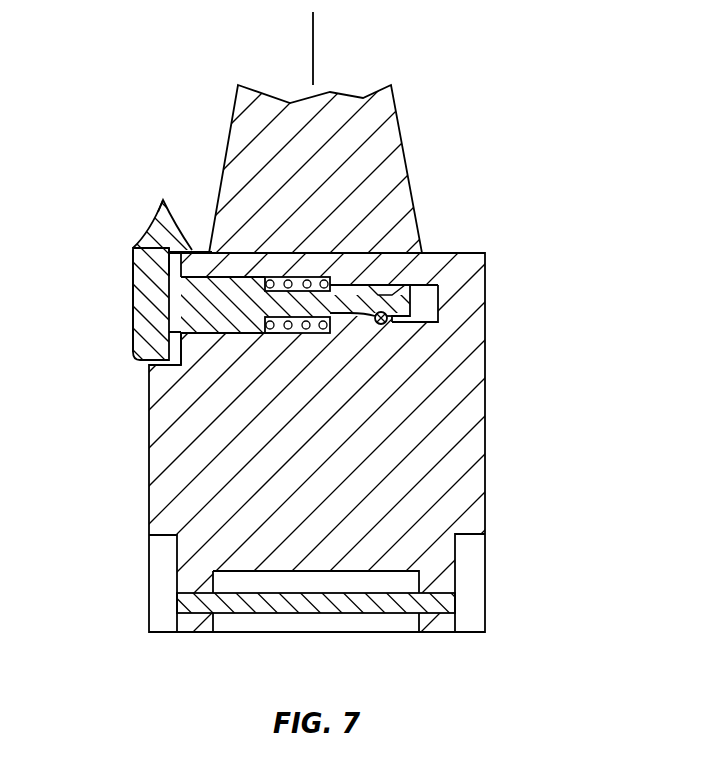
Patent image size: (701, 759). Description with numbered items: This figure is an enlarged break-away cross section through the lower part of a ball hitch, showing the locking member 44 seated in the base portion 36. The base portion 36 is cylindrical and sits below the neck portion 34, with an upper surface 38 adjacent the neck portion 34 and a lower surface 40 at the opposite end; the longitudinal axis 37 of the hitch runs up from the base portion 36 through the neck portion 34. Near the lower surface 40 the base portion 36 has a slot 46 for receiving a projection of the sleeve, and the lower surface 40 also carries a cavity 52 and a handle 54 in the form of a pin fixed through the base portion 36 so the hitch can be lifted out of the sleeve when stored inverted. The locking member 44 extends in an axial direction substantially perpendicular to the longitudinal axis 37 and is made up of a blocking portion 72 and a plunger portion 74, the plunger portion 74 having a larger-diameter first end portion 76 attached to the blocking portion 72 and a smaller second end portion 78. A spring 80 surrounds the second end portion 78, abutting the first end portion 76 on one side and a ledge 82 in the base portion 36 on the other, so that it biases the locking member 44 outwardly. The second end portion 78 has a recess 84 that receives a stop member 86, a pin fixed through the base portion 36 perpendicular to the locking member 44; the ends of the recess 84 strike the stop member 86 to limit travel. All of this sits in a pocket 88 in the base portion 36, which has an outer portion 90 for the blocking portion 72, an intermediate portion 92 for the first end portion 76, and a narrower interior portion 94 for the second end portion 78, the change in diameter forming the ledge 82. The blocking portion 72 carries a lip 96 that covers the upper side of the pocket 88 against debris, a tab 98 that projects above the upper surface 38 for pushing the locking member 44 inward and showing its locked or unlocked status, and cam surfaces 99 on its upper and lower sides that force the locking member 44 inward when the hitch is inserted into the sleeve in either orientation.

The neck portion 34 is at (402, 122).
The base portion 36 is at (484, 485).
The longitudinal axis 37 is at (313, 30).
The upper surface 38 is at (483, 253).
The lower surface 40 is at (437, 633).
The locking member 44 is at (130, 299).
The slot 46 is at (150, 590).
The cavity 52 is at (214, 617).
The handle 54 is at (280, 615).
The blocking portion 72 is at (140, 278).
The plunger portion 74 is at (208, 326).
The first end portion 76 is at (195, 338).
The second end portion 78 is at (372, 284).
The spring 80 is at (268, 277).
The ledge 82 is at (328, 329).
The recess 84 is at (407, 284).
The stop member 86 is at (386, 323).
The pocket 88 is at (265, 326).
The outer portion 90 is at (168, 358).
The intermediate portion 92 is at (246, 326).
The interior portion 94 is at (428, 298).
The lip 96 is at (190, 225).
The tab 98 is at (155, 205).
The cam surfaces 99 is at (135, 242).